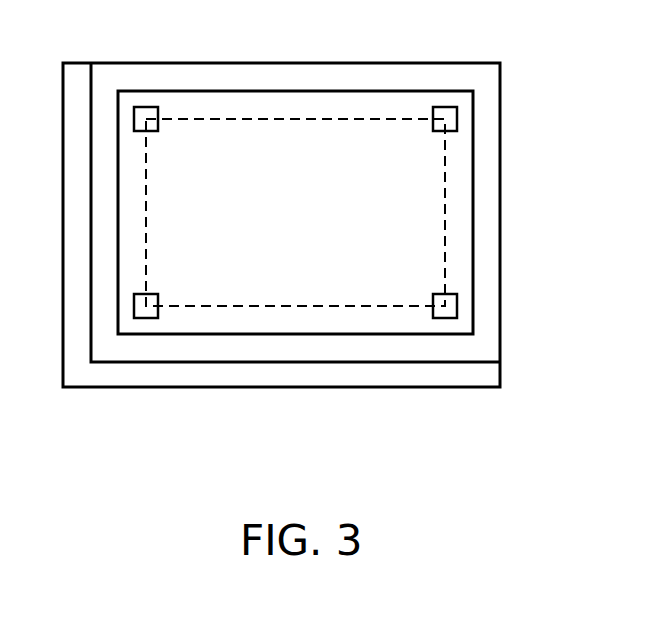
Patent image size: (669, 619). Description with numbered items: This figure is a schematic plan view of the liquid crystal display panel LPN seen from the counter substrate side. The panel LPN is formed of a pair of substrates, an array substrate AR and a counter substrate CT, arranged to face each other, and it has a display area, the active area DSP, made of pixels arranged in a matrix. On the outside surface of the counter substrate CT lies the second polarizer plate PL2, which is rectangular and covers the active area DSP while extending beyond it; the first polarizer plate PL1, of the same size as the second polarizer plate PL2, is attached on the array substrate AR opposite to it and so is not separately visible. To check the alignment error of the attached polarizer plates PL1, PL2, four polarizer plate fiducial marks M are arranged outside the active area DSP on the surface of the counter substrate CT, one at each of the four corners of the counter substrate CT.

The polarizer plate fiducial mark M is at (134, 119).
The active area DSP is at (445, 157).
The second polarizer plate PL2 is at (347, 225).
The first polarizer plate PL1 is at (473, 210).
The counter substrate CT is at (463, 355).
The array substrate AR is at (375, 373).
The liquid crystal display panel LPN is at (295, 388).